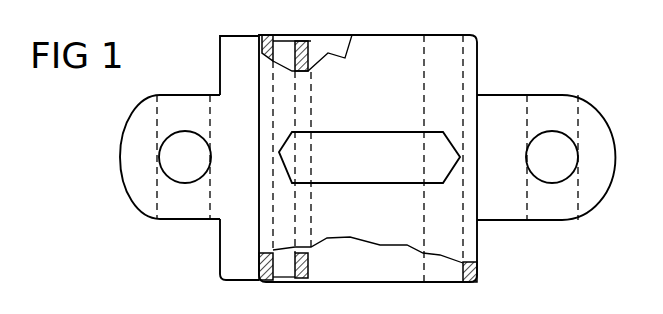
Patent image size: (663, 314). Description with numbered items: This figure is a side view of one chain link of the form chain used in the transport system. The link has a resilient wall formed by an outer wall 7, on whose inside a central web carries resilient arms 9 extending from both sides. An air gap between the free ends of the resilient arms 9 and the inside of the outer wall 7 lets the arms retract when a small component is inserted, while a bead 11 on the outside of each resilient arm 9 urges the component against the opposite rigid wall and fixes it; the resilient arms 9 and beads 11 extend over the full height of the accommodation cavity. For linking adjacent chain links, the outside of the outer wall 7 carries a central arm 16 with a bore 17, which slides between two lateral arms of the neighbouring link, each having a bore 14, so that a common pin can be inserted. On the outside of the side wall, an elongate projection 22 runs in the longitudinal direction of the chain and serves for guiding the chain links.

The outer wall 7 is at (258, 264).
The resilient arms 9 is at (312, 262).
The bead 11 is at (338, 64).
The bore 14 is at (551, 150).
The central arm 16 is at (136, 147).
The bore 17 is at (180, 150).
The elongate projection 22 is at (367, 170).